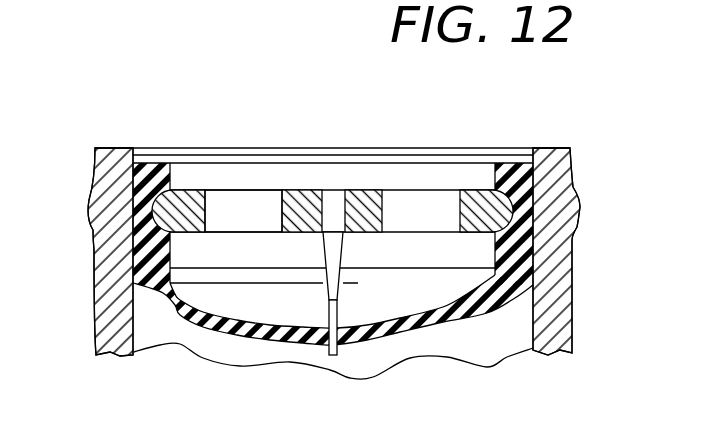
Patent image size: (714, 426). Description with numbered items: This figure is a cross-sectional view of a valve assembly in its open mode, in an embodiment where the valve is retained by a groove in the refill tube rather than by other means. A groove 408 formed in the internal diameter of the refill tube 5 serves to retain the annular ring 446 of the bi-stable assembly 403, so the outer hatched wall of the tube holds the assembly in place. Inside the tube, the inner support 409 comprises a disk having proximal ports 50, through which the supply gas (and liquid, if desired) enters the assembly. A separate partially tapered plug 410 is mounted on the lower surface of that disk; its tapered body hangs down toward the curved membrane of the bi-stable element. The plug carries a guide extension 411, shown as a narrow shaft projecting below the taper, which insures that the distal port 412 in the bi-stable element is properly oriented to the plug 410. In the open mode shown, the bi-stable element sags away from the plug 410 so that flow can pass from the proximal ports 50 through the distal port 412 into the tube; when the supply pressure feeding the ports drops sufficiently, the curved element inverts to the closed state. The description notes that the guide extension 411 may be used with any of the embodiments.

The refill tube 5 is at (96, 322).
The proximal ports 50 is at (236, 207).
The bi-stable assembly 403 is at (196, 128).
The groove 408 is at (570, 192).
The inner support 409 is at (471, 178).
The partially tapered plug 410 is at (357, 257).
The guide extension 411 is at (334, 356).
The distal port 412 is at (265, 334).
The annular ring 446 is at (148, 280).